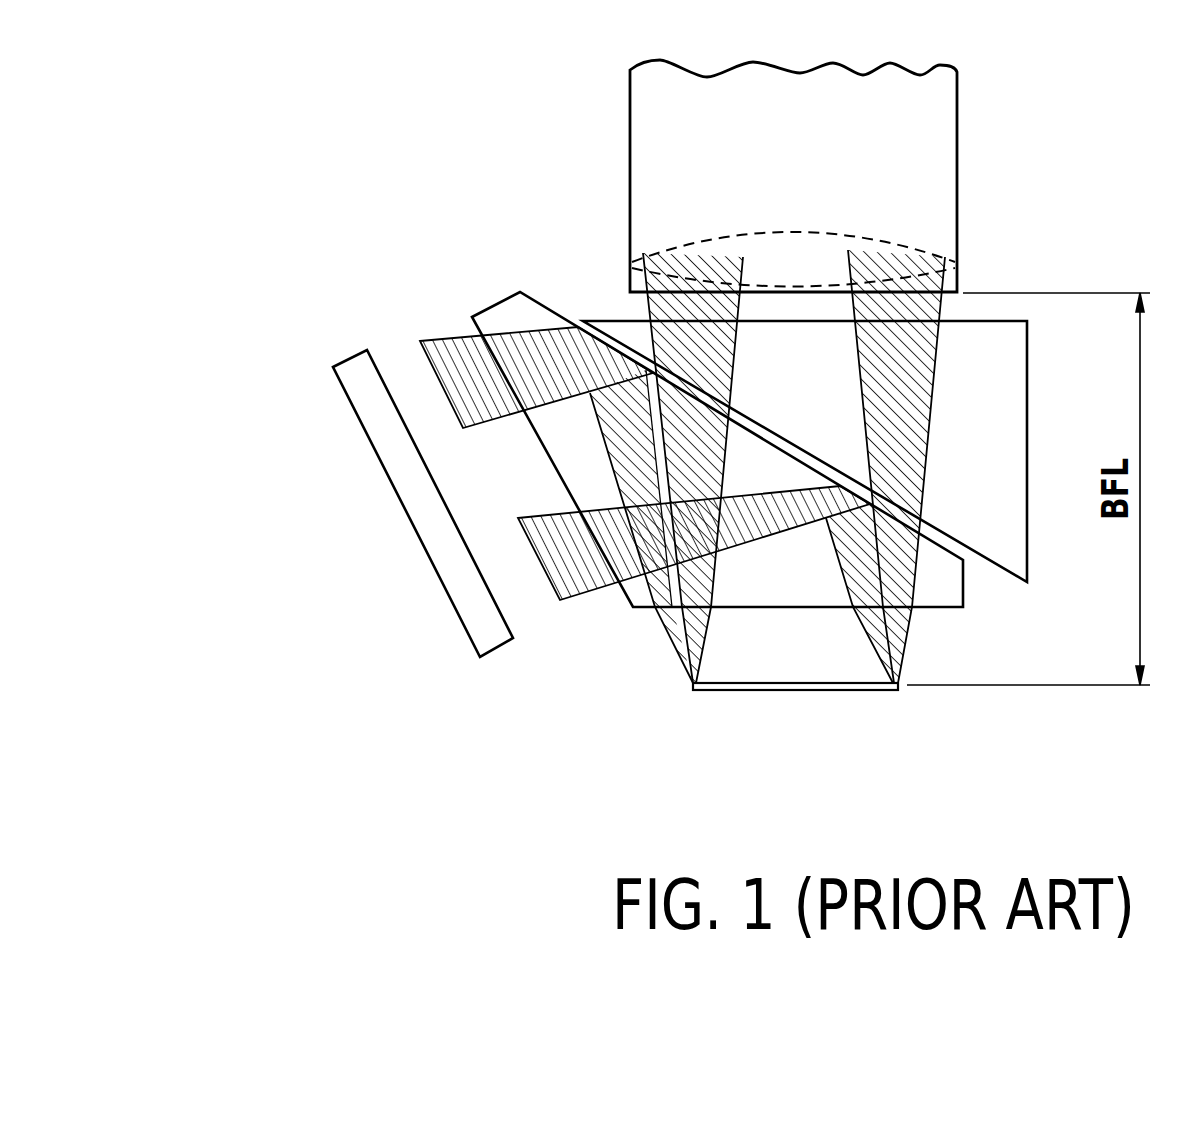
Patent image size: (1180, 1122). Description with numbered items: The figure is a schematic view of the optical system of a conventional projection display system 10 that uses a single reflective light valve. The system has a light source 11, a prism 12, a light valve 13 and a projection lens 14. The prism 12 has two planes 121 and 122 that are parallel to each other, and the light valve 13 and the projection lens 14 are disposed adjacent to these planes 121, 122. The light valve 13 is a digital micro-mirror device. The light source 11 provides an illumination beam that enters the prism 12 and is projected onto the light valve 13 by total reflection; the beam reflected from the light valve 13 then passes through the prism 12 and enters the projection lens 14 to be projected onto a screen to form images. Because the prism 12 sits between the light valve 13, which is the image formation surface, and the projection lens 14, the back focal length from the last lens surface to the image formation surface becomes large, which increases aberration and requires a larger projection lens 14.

The projection display system 10 is at (372, 163).
The light source 11 is at (367, 398).
The prism 12 is at (815, 474).
The plane 121 is at (937, 610).
The plane 122 is at (993, 323).
The light valve 13 is at (722, 690).
The projection lens 14 is at (938, 153).